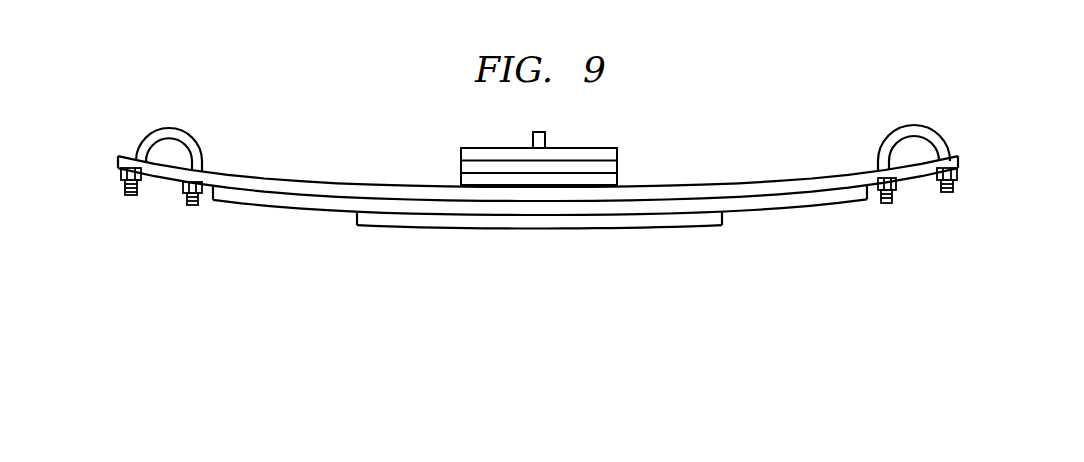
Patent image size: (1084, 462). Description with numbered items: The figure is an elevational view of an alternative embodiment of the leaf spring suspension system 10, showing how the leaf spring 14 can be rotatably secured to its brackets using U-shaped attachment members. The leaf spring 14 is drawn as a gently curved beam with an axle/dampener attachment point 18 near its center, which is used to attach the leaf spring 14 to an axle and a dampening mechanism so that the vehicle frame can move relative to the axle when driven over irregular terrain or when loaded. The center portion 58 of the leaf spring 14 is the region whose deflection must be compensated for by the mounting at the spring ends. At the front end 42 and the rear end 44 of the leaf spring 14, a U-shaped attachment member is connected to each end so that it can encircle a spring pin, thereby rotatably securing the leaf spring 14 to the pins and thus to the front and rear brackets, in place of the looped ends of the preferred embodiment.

The leaf spring suspension system 10 is at (671, 136).
The leaf spring 14 is at (760, 218).
The axle/dampener attachment point 18 is at (495, 148).
The front end 42 is at (162, 183).
The rear end 44 is at (917, 178).
The center portion 58 is at (542, 229).